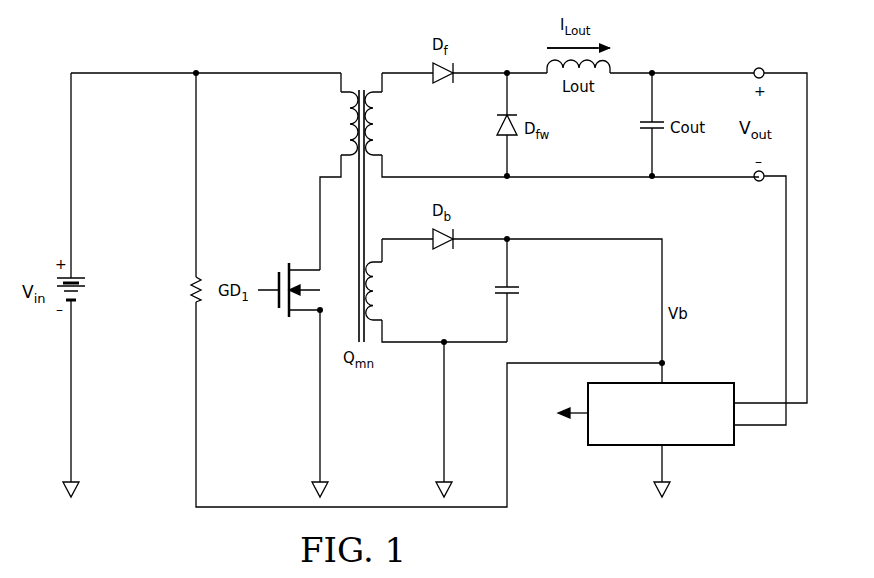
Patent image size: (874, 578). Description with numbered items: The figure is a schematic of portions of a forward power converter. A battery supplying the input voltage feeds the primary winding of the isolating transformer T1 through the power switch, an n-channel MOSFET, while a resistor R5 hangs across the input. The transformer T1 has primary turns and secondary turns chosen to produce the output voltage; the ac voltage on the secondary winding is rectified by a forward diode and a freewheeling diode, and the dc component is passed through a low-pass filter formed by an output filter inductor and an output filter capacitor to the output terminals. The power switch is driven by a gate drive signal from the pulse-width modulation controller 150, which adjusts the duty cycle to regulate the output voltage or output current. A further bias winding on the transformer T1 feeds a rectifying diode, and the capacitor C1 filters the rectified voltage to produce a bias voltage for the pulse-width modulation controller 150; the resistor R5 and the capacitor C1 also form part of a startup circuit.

The pulse-width modulation controller 150 is at (700, 445).
The resistor R5 is at (180, 289).
The capacitor C1 is at (519, 293).
The isolating transformer T1 is at (361, 207).